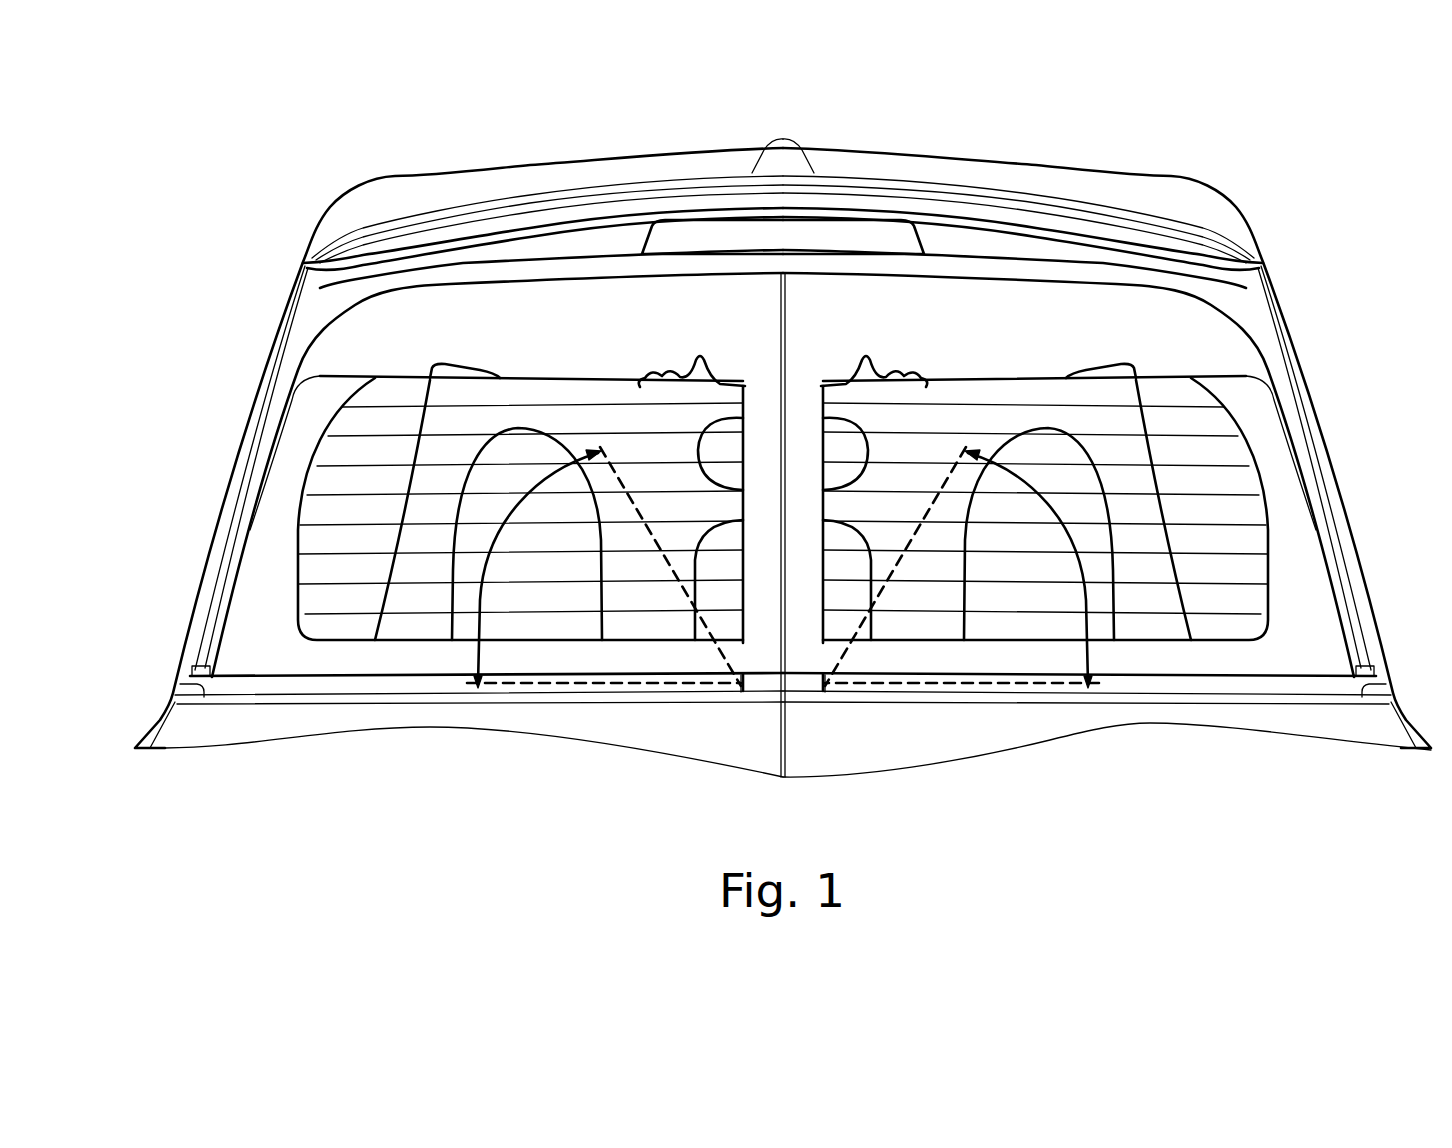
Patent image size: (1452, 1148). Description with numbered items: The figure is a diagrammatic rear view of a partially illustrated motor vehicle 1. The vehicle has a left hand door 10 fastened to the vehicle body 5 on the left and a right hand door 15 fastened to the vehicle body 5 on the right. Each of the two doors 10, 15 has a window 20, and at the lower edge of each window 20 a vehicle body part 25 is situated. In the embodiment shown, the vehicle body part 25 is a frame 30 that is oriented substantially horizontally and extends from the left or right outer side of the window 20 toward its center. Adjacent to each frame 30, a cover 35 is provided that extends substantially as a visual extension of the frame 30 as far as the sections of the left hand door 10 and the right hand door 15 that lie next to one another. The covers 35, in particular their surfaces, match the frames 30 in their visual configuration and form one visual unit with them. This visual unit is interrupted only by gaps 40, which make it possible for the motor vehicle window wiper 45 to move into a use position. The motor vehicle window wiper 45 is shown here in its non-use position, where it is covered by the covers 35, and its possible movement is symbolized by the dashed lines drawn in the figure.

The motor vehicle 1 is at (318, 191).
The vehicle body 5 is at (443, 223).
The left hand door 10 is at (278, 653).
The right hand door 15 is at (1250, 640).
The window 20 is at (472, 400).
The vehicle body part 25 is at (342, 687).
The frame 30 is at (415, 683).
The cover 35 is at (563, 687).
The gap 40 is at (463, 681).
The motor vehicle window wiper 45 is at (628, 684).